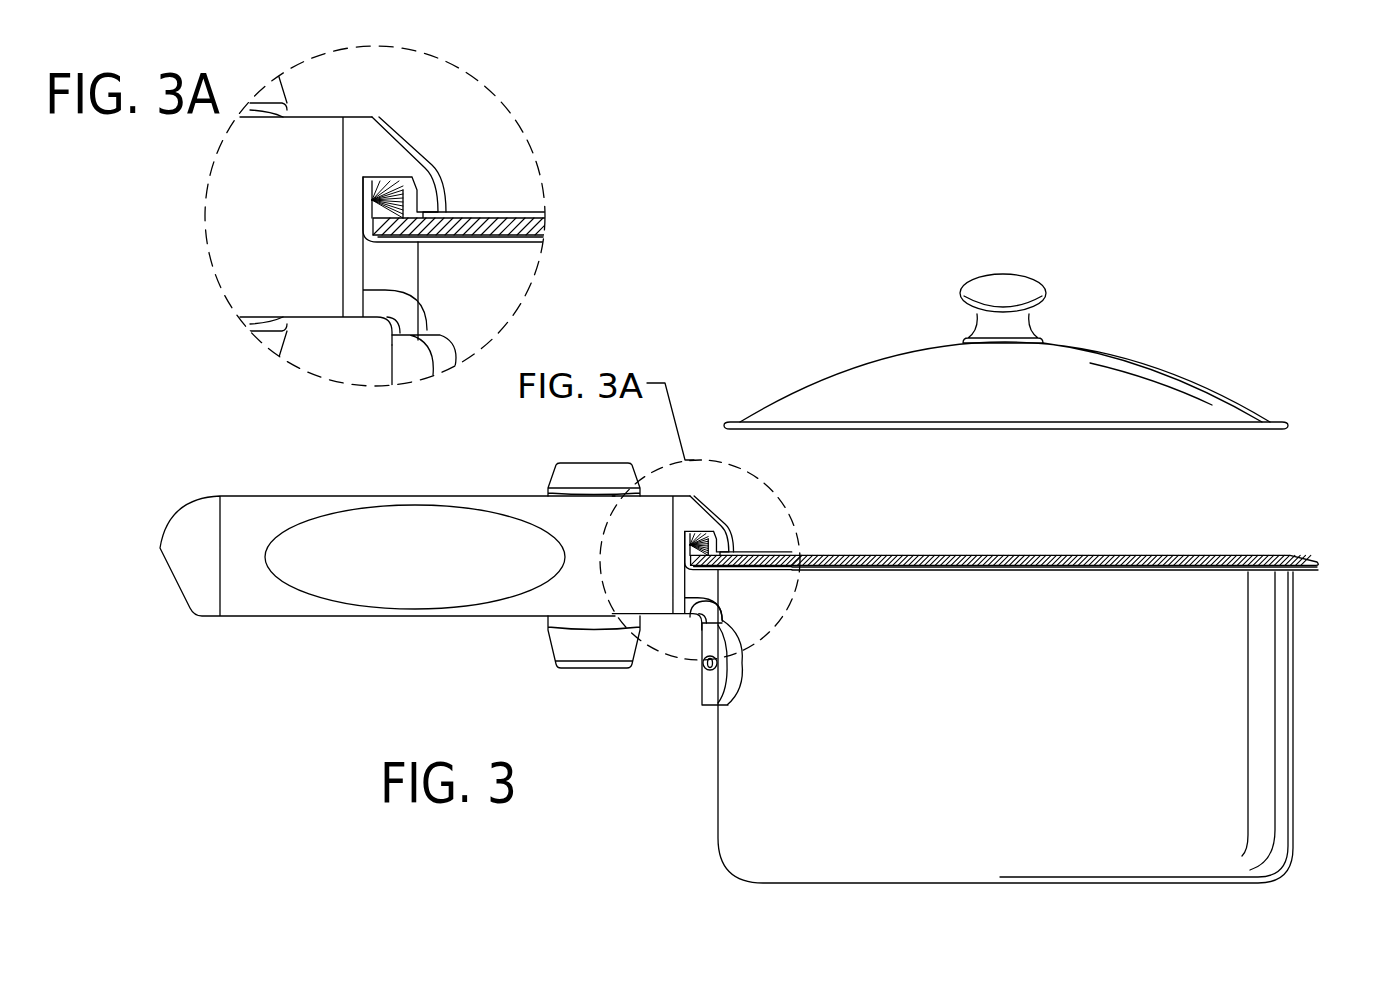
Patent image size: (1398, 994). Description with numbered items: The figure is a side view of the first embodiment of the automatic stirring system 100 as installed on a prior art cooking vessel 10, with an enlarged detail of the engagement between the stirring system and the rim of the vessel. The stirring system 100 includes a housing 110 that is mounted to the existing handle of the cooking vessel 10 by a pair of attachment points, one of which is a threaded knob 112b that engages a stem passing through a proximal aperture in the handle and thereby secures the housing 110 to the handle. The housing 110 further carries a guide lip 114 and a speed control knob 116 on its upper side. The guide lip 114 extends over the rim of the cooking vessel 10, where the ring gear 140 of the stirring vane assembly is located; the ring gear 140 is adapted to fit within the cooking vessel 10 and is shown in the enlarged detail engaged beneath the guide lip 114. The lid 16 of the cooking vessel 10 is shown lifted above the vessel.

In FIG. 3, the automatic stirring system 100 is at (292, 462).
In FIG. 3, the housing 110 is at (255, 592).
In FIG. 3, the threaded knob 112b is at (587, 648).
In FIG. 3A, the guide lip 114 is at (410, 177).
In FIG. 3, the guide lip 114 is at (722, 537).
In FIG. 3, the speed control knob 116 is at (587, 470).
In FIG. 3A, the ring gear 140 is at (457, 223).
In FIG. 3, the ring gear 140 is at (1310, 557).
In FIG. 3, the cooking vessel 10 is at (1270, 684).
In FIG. 3, the lid 16 is at (1190, 387).